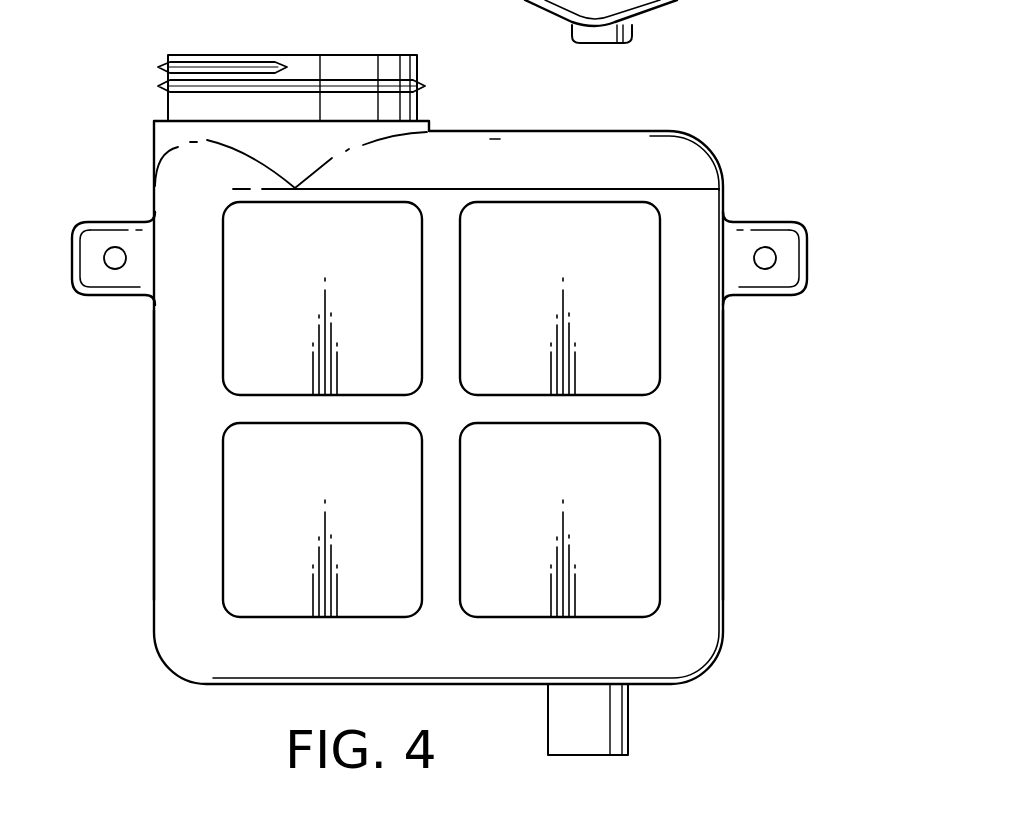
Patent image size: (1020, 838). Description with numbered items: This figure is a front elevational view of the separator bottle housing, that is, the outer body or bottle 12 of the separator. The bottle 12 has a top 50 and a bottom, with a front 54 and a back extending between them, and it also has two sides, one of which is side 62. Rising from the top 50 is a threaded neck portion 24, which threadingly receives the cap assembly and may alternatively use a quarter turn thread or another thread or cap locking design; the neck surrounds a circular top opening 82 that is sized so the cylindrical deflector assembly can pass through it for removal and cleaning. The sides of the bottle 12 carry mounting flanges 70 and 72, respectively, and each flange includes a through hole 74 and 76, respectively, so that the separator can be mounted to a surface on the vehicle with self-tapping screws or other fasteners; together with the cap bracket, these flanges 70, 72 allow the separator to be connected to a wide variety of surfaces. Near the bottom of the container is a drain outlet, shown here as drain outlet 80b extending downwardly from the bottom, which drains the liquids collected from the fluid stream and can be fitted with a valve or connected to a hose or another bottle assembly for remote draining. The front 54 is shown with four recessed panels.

The outer body or bottle 12 is at (742, 128).
The threaded neck portion 24 is at (163, 69).
The top opening 82 is at (283, 55).
The top 50 is at (510, 133).
The front 54 is at (620, 237).
The mounting flange 70 is at (107, 237).
The mounting flange 72 is at (762, 238).
The through hole 74 is at (107, 264).
The through hole 76 is at (776, 264).
The side 62 is at (154, 470).
The drain outlet 80b is at (628, 712).